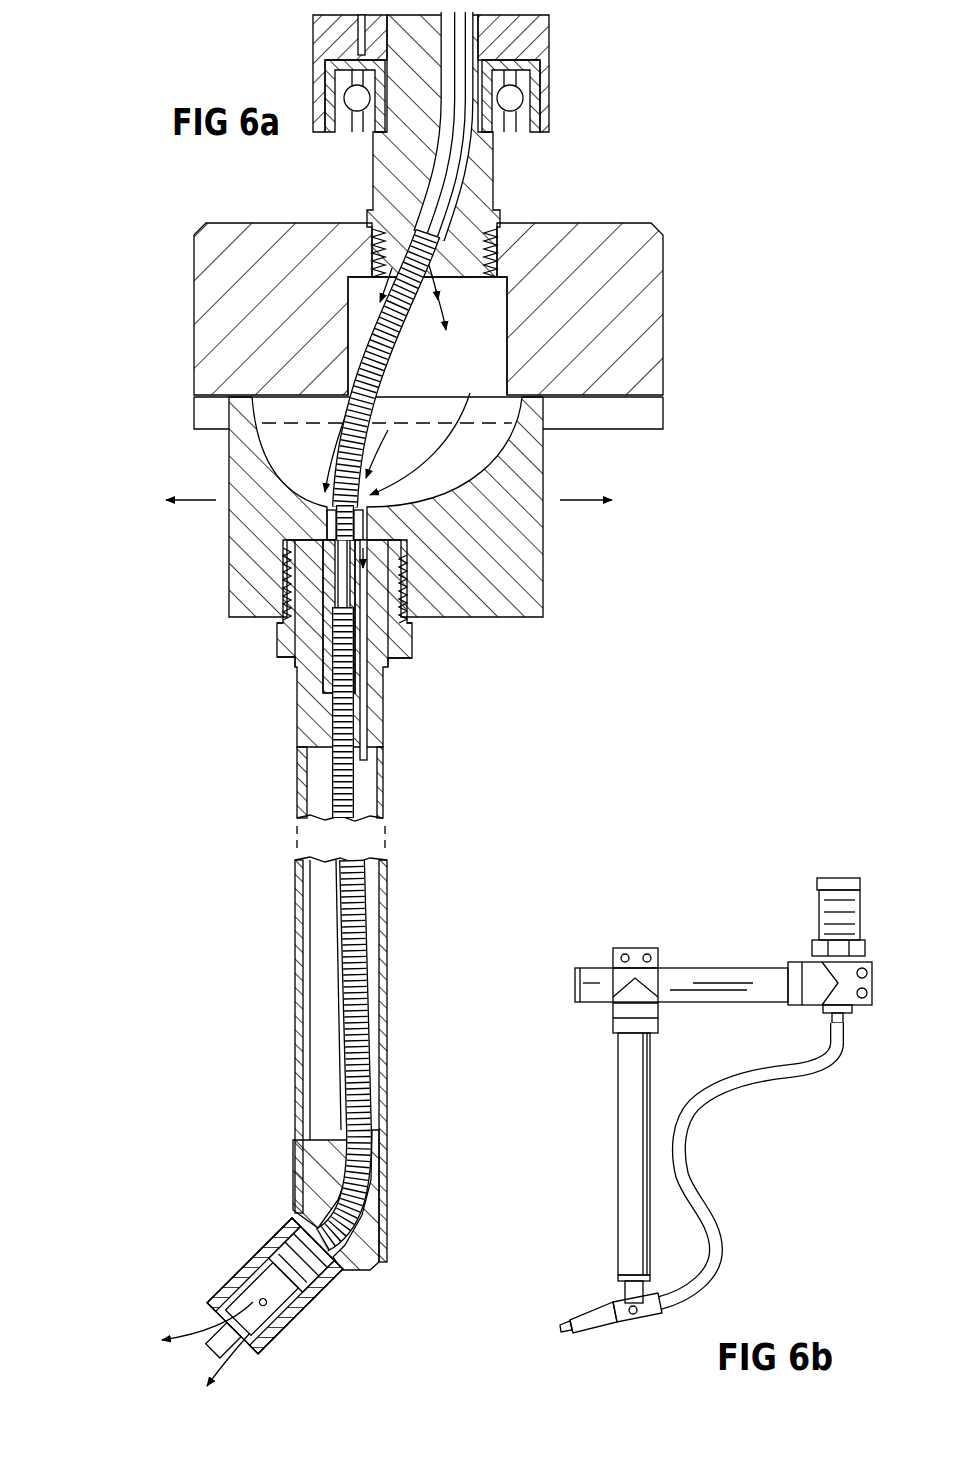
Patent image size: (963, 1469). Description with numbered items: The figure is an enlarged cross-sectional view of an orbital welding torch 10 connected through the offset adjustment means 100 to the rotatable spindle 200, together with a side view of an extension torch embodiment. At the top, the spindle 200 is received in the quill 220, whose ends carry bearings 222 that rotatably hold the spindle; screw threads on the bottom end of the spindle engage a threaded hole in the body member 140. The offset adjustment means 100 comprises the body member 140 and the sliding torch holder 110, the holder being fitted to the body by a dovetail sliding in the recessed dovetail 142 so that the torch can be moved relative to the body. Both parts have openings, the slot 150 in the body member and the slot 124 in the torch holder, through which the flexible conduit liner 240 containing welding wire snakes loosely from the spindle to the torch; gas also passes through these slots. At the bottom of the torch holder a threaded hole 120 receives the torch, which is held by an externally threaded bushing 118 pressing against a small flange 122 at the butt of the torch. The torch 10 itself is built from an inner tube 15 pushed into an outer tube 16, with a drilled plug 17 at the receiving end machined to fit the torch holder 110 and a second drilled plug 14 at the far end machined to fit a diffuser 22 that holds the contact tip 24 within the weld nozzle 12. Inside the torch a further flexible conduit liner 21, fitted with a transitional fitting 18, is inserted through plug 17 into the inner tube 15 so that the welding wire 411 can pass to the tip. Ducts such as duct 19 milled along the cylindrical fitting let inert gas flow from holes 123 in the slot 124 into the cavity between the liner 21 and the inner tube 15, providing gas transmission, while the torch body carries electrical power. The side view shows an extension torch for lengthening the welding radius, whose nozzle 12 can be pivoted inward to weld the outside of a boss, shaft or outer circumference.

In FIG. 6A, the orbital welding torch 10 is at (278, 960).
In FIG. 6A, the weld nozzle 12 is at (244, 1260).
In FIG. 6B, the weld nozzle 12 is at (597, 1331).
In FIG. 6A, the second plug 14 is at (303, 1167).
In FIG. 6A, the inner tube 15 is at (347, 1096).
In FIG. 6A, the outer tube 16 is at (295, 1040).
In FIG. 6A, the plug 17 is at (312, 731).
In FIG. 6A, the transitional fitting 18 is at (323, 678).
In FIG. 6A, the duct 19 is at (355, 662).
In FIG. 6A, the flexible conduit liner 21 is at (358, 1000).
In FIG. 6A, the diffuser 22 is at (292, 1234).
In FIG. 6A, the contact tip 24 is at (252, 1312).
In FIG. 6A, the offset adjustment means 100 is at (168, 336).
In FIG. 6A, the sliding torch holder 110 is at (545, 566).
In FIG. 6A, the externally threaded bushing 118 is at (278, 641).
In FIG. 6B, the externally threaded bushing 118 is at (818, 922).
In FIG. 6A, the threaded hole 120 is at (281, 598).
In FIG. 6A, the small flange 122 is at (283, 543).
In FIG. 6B, the small flange 122 is at (817, 884).
In FIG. 6A, the holes 123 is at (327, 518).
In FIG. 6A, the slot 124 is at (310, 454).
In FIG. 6A, the body member 140 is at (664, 297).
In FIG. 6A, the recessed dovetail 142 is at (603, 421).
In FIG. 6A, the slot 150 is at (450, 362).
In FIG. 6A, the rotatable spindle 200 is at (492, 188).
In FIG. 6A, the quill 220 is at (549, 78).
In FIG. 6A, the bearings 222 is at (530, 140).
In FIG. 6A, the flexible conduit liner 240 is at (364, 396).
In FIG. 6A, the welding wire 411 is at (367, 590).